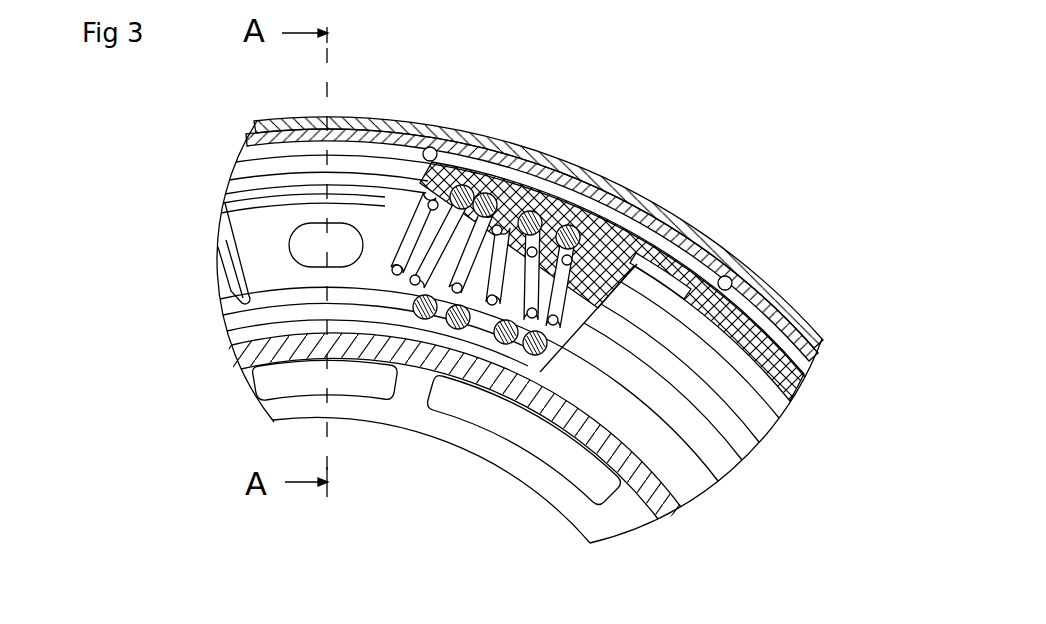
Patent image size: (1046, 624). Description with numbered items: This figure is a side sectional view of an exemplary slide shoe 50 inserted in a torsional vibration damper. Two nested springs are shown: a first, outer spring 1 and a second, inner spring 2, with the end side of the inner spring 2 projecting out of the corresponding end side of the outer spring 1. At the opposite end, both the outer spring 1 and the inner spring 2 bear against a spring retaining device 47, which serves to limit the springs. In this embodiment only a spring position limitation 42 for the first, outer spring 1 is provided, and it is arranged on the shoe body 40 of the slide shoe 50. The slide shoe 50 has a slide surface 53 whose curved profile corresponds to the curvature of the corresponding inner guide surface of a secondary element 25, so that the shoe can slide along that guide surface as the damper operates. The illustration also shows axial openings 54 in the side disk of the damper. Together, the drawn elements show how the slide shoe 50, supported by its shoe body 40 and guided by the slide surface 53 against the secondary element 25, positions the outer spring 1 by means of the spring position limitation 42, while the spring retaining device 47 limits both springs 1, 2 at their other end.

The first, outer spring 1 is at (412, 309).
The second, inner spring 2 is at (390, 255).
The secondary element 25 is at (240, 128).
The shoe body 40 is at (492, 190).
The spring position limitation 42 is at (227, 207).
The spring retaining device 47 is at (655, 408).
The slide shoe 50 is at (783, 438).
The slide surface 53 is at (660, 229).
The axial openings 54 is at (426, 153).